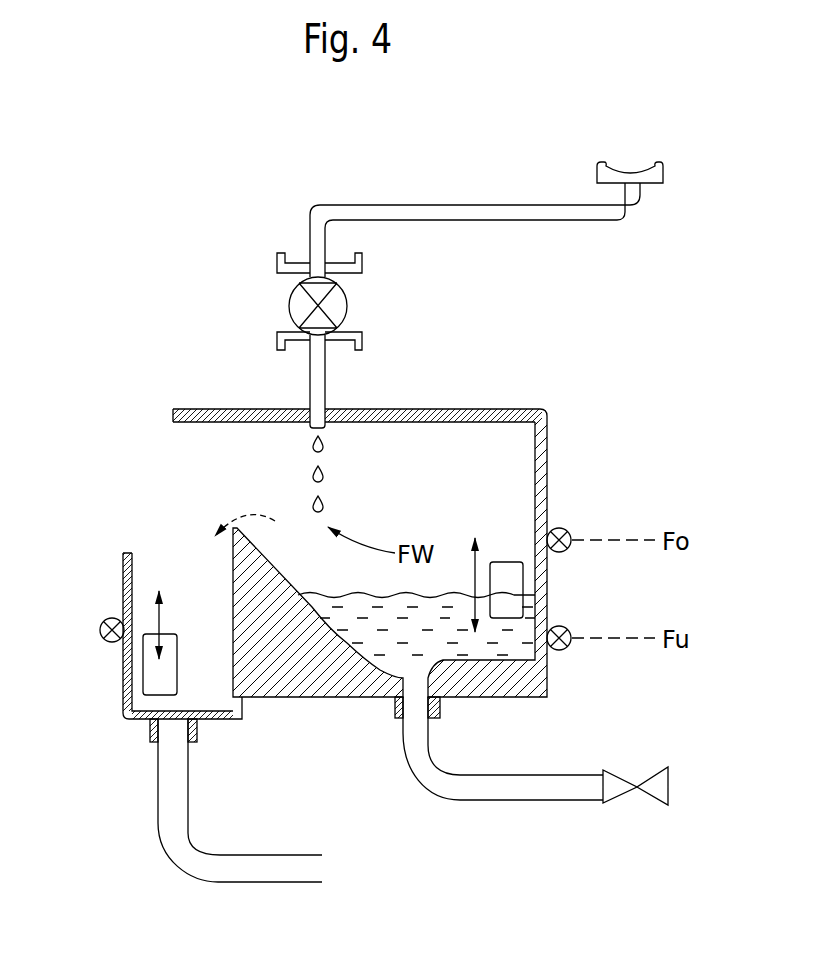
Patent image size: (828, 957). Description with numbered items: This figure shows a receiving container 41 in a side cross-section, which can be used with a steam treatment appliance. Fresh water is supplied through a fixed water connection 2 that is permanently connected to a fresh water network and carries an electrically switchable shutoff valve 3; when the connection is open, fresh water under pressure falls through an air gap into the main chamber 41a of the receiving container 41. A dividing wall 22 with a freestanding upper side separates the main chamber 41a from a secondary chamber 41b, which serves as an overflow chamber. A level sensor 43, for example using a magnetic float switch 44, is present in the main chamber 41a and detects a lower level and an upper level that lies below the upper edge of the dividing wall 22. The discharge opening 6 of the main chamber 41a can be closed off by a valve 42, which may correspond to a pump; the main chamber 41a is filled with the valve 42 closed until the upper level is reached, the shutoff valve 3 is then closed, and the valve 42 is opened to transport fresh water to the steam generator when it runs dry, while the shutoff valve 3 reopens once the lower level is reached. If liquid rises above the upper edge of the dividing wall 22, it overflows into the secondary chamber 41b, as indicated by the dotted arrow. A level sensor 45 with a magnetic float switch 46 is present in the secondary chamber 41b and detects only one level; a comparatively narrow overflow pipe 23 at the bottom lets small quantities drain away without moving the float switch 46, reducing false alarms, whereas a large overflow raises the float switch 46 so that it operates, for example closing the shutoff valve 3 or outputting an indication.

The fixed water connection 2 is at (468, 205).
The shutoff valve 3 is at (348, 306).
The receiving container 41 is at (166, 349).
The main chamber 41a is at (458, 447).
The secondary chamber 41b is at (145, 581).
The dividing wall 22 is at (275, 574).
The level sensor 43 is at (237, 526).
The magnetic float switch 44 is at (506, 568).
The level sensor 45 is at (178, 619).
The magnetic float switch 46 is at (155, 671).
The discharge opening 6 is at (397, 703).
The valve 42 is at (615, 790).
The overflow pipe 23 is at (177, 827).